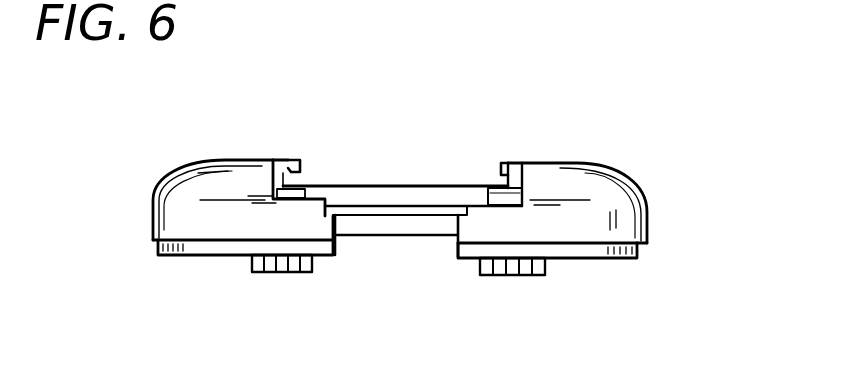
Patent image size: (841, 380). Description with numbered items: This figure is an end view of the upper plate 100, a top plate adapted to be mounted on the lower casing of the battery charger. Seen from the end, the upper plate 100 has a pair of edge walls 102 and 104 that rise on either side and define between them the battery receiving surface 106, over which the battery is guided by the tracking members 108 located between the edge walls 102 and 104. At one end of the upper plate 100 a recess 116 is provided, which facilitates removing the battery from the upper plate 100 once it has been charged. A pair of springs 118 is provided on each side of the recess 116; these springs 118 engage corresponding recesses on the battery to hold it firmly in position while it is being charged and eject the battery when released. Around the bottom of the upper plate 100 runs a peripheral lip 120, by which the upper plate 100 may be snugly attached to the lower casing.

The upper plate 100 is at (578, 120).
The edge wall 102 is at (193, 183).
The edge wall 104 is at (597, 190).
The battery receiving surface 106 is at (400, 184).
The tracking members 108 is at (504, 178).
The recess 116 is at (387, 236).
The springs 118 is at (300, 188).
The peripheral lip 120 is at (209, 248).